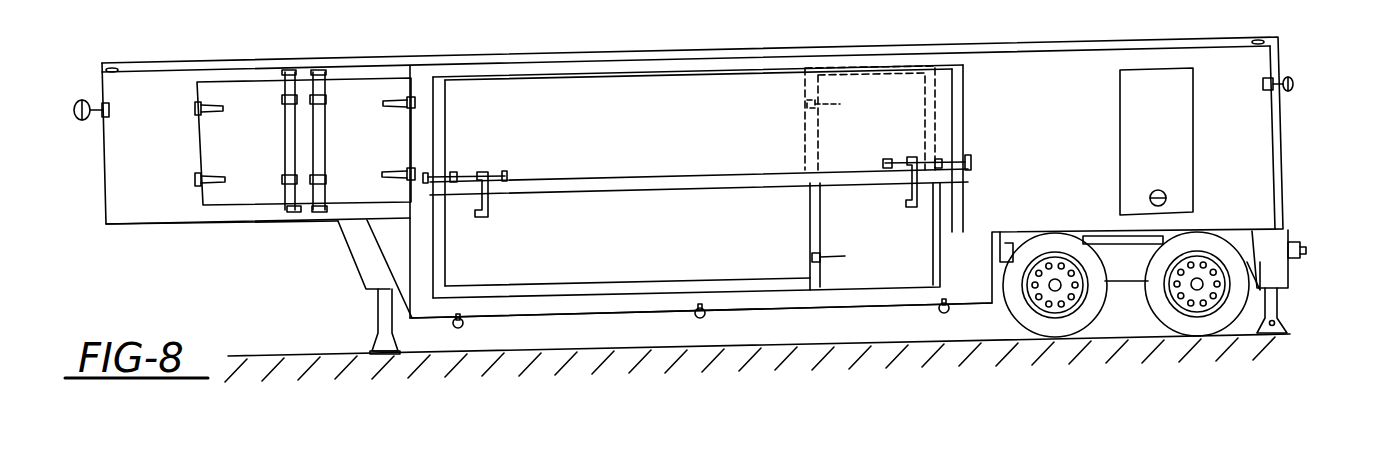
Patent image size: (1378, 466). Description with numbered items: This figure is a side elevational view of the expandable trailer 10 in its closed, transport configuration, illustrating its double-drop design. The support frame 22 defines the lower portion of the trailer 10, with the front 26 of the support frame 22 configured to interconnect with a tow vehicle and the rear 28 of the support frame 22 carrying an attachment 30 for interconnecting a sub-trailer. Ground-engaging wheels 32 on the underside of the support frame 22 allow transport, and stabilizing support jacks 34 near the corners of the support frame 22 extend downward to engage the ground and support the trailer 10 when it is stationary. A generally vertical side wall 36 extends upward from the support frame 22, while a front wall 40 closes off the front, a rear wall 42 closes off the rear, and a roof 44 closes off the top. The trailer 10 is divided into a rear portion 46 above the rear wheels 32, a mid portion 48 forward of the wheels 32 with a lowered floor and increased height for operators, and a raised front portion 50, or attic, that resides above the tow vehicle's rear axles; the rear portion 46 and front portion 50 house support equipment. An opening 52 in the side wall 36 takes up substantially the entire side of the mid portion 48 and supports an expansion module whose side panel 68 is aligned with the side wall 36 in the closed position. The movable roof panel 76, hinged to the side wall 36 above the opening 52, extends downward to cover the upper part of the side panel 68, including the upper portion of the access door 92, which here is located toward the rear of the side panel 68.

The trailer 10 is at (590, 0).
The support frame 22 is at (838, 300).
The front of the support frame 26 is at (203, 212).
The rear of the support frame 28 is at (1285, 230).
The attachment 30 is at (1306, 250).
The ground-engaging wheels 32 is at (1148, 293).
The stabilizing support jacks 34 is at (378, 310).
The side wall 36 is at (432, 318).
The front wall 40 is at (102, 163).
The rear wall 42 is at (1283, 128).
The roof 44 is at (933, 50).
The rear portion 46 is at (1082, 143).
The mid portion 48 is at (672, 85).
The front portion 50 is at (162, 165).
The opening 52 is at (972, 233).
The side panel 68 is at (640, 257).
The movable roof panel 76 is at (705, 155).
The access door 92 is at (892, 235).